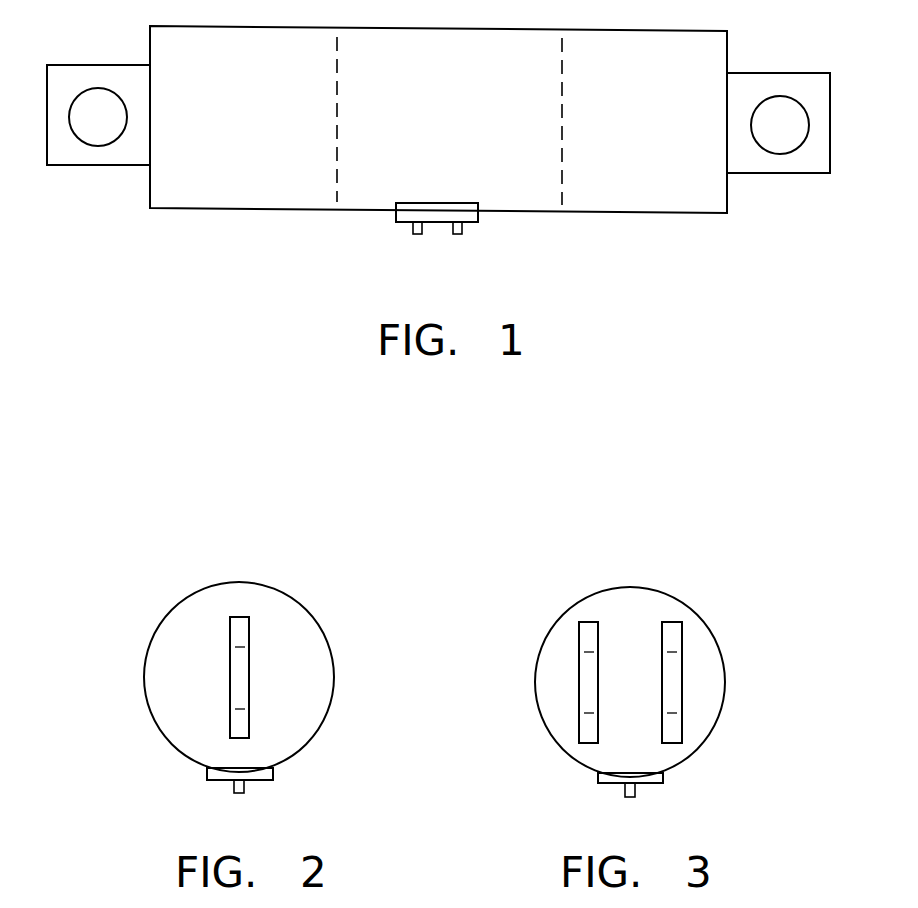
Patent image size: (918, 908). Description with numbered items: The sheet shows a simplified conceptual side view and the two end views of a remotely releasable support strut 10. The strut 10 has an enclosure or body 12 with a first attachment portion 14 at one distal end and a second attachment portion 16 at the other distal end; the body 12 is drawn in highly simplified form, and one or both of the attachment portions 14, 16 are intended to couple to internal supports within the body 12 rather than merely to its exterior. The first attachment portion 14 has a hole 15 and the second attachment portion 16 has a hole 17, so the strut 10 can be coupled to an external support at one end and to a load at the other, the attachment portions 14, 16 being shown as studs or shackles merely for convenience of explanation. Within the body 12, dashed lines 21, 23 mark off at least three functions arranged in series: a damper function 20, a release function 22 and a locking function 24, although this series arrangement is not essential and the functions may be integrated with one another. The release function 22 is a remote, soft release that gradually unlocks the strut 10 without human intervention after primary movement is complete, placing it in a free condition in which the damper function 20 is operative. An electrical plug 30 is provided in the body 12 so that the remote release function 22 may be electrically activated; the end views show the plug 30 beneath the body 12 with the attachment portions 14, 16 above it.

In FIG. 1, the remotely releasable support strut 10 is at (430, 147).
In FIG. 2, the remotely releasable support strut 10 is at (206, 676).
In FIG. 3, the remotely releasable support strut 10 is at (619, 680).
In FIG. 1, the body 12 is at (502, 212).
In FIG. 2, the body 12 is at (167, 740).
In FIG. 3, the body 12 is at (557, 745).
In FIG. 1, the first attachment portion 14 is at (107, 166).
In FIG. 2, the first attachment portion 14 is at (249, 637).
In FIG. 1, the hole 15 is at (74, 103).
In FIG. 2, the hole 15 is at (235, 693).
In FIG. 1, the second attachment portion 16 is at (750, 174).
In FIG. 3, the second attachment portion 16 is at (600, 635).
In FIG. 1, the hole 17 is at (752, 120).
In FIG. 3, the hole 17 is at (590, 695).
In FIG. 1, the damper function 20 is at (257, 135).
In FIG. 1, the dashed line 21 is at (337, 120).
In FIG. 1, the release function 22 is at (464, 165).
In FIG. 1, the dashed line 23 is at (562, 95).
In FIG. 1, the locking function 24 is at (657, 137).
In FIG. 1, the electrical plug 30 is at (405, 213).
In FIG. 2, the electrical plug 30 is at (267, 777).
In FIG. 3, the electrical plug 30 is at (658, 778).